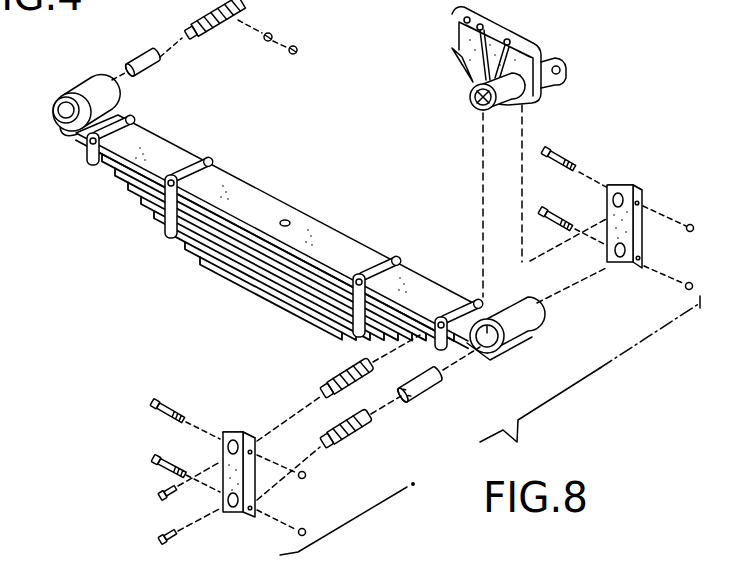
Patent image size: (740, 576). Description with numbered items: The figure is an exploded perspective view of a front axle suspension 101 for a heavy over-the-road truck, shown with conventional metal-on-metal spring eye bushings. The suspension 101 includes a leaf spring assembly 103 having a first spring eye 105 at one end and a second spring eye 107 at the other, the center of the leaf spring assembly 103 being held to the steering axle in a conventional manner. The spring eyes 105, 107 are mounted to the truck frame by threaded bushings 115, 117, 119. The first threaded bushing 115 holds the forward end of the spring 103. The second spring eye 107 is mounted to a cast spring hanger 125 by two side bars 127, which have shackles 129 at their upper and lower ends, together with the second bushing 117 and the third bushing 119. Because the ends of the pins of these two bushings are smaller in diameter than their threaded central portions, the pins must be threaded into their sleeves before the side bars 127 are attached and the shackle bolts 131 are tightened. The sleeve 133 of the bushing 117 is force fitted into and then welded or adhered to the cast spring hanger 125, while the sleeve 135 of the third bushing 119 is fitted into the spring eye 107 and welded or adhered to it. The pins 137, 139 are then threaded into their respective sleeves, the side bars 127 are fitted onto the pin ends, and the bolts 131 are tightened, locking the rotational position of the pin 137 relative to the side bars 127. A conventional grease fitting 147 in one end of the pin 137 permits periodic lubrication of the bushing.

The front axle suspension 101 is at (133, 290).
The leaf spring assembly 103 is at (282, 202).
The first spring eye 105 is at (89, 92).
The second spring eye 107 is at (528, 324).
The first threaded bushing 115 is at (188, 48).
The second threaded bushing 117 is at (315, 382).
The third threaded bushing 119 is at (344, 444).
The cast spring hanger 125 is at (527, 40).
The side bars 127 is at (622, 264).
The shackles 129 is at (612, 180).
The shackle bolts 131 is at (548, 152).
The sleeve of the second bushing 133 is at (475, 103).
The sleeve of the third bushing 135 is at (435, 381).
The pin of the second bushing 137 is at (347, 371).
The pin of the third bushing 139 is at (360, 432).
The grease fitting 147 is at (156, 494).